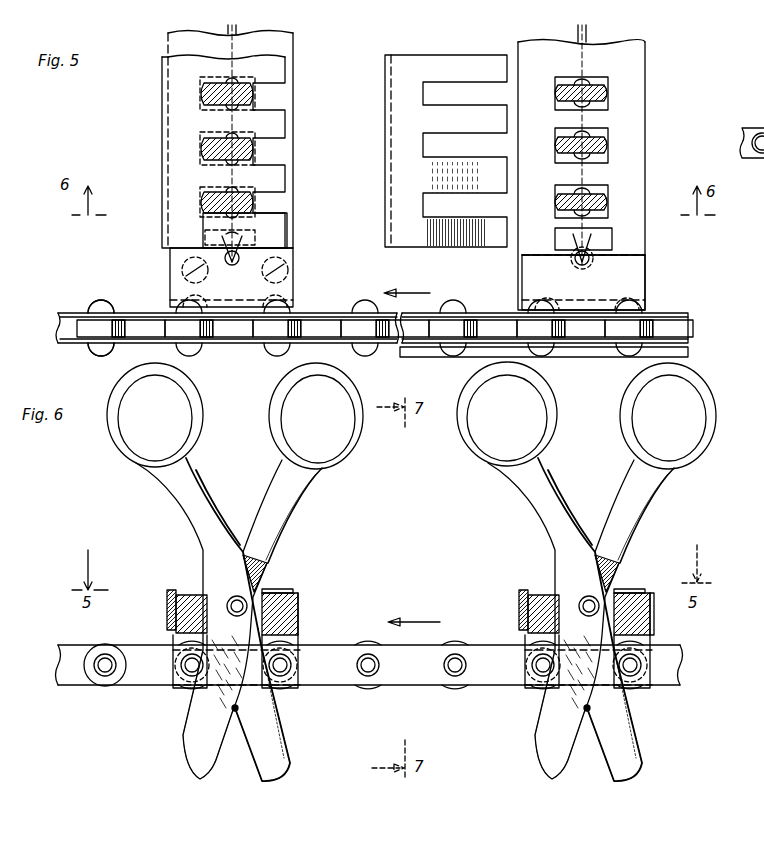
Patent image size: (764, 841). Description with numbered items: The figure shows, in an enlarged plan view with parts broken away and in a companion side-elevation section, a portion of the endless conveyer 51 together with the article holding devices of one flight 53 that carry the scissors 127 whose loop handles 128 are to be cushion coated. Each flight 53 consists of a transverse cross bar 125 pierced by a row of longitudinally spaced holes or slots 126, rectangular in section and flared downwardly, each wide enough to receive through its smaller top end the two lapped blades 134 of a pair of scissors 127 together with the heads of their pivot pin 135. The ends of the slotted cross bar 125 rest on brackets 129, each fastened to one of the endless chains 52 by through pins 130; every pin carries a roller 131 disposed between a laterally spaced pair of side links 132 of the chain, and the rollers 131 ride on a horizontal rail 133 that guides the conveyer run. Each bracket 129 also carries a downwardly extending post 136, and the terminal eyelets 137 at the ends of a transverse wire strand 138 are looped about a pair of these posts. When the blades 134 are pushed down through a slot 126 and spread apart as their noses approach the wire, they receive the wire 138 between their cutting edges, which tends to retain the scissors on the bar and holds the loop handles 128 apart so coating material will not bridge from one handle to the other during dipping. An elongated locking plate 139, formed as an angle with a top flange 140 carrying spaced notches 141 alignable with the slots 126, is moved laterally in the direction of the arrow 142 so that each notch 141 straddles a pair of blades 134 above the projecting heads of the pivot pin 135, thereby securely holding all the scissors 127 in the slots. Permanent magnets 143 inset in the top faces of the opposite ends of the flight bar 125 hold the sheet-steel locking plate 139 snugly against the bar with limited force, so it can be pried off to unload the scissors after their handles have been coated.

In FIG. 5, the endless conveyer 51 is at (156, 154).
In FIG. 6, the endless conveyer 51 is at (381, 560).
In FIG. 5, the endless chain 52 is at (483, 313).
In FIG. 6, the endless chain 52 is at (366, 690).
In FIG. 5, the flight 53 is at (294, 155).
In FIG. 6, the flight 53 is at (311, 622).
In FIG. 6, the cross bar 125 is at (655, 628).
In FIG. 5, the holes or slots 126 is at (612, 82).
In FIG. 6, the holes or slots 126 is at (300, 602).
In FIG. 6, the scissors 127 is at (296, 504).
In FIG. 6, the loop handles 128 is at (198, 432).
In FIG. 5, the bracket 129 is at (283, 272).
In FIG. 5, the through pin 130 is at (272, 352).
In FIG. 6, the through pin 130 is at (190, 672).
In FIG. 5, the roller 131 is at (155, 318).
In FIG. 6, the roller 131 is at (168, 668).
In FIG. 5, the side links 132 is at (60, 322).
In FIG. 6, the side links 132 is at (437, 660).
In FIG. 5, the rail 133 is at (690, 352).
In FIG. 5, the blades 134 is at (608, 90).
In FIG. 6, the blades 134 is at (190, 758).
In FIG. 5, the pivot pin 135 is at (585, 78).
In FIG. 6, the pivot pin 135 is at (262, 582).
In FIG. 5, the post 136 is at (600, 260).
In FIG. 5, the terminal eyelets 137 is at (575, 248).
In FIG. 6, the wire strand 138 is at (235, 712).
In FIG. 5, the locking plate 139 is at (175, 190).
In FIG. 6, the locking plate 139 is at (172, 590).
In FIG. 5, the top flange 140 is at (288, 224).
In FIG. 6, the top flange 140 is at (190, 590).
In FIG. 5, the notches 141 is at (283, 88).
In FIG. 6, the notches 141 is at (248, 602).
In FIG. 5, the arrow 142 is at (527, 172).
In FIG. 5, the permanent magnets 143 is at (257, 238).